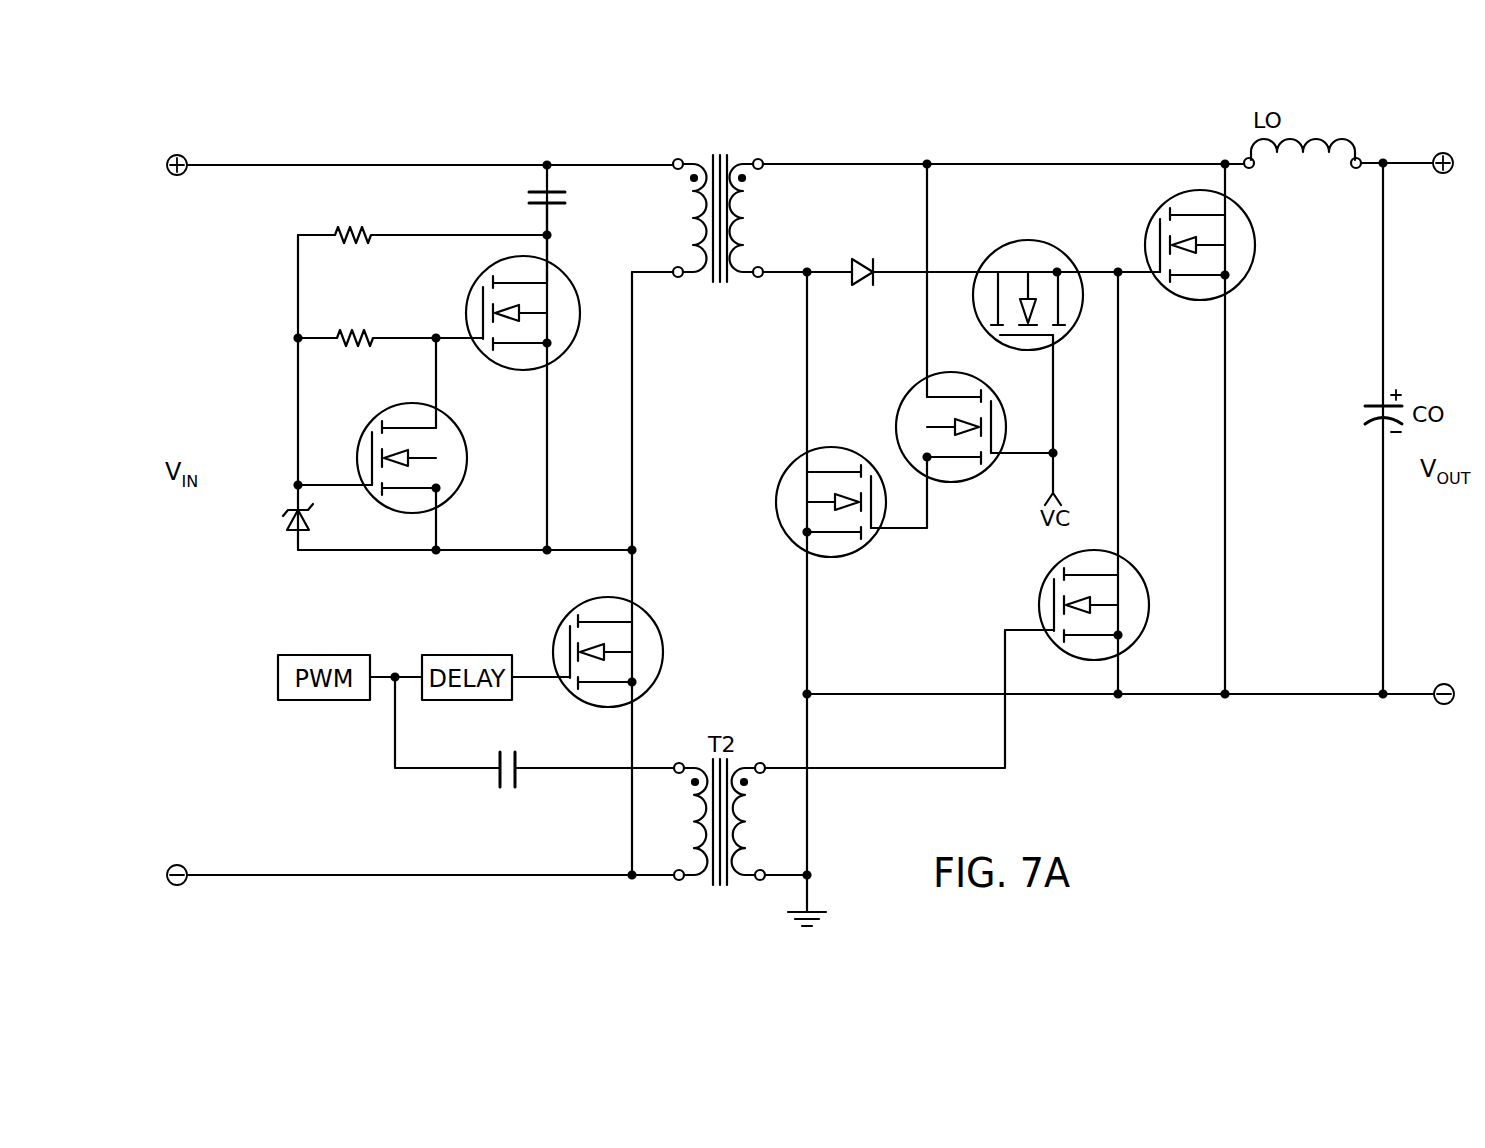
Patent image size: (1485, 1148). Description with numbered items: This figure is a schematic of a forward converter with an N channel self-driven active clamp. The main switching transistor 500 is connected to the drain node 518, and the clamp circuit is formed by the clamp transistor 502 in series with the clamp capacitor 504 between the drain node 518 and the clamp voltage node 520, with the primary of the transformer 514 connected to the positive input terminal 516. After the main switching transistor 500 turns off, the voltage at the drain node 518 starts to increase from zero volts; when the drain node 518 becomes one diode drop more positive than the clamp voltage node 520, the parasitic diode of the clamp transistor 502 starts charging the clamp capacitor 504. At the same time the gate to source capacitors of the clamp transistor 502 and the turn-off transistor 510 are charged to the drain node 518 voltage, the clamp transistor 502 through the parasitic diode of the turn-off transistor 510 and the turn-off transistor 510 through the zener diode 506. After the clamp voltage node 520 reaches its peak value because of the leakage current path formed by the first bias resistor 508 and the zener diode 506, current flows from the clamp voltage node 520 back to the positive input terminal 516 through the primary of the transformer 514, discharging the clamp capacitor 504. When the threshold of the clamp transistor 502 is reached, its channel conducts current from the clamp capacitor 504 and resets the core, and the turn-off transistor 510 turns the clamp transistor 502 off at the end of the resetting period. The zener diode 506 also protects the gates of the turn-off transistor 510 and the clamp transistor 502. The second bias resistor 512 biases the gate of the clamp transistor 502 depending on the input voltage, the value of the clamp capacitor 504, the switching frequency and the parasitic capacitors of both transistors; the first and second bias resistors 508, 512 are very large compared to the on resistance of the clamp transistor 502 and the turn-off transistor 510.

The Q1 500 is at (653, 601).
The Q2 502 is at (574, 352).
The CA 504 is at (526, 191).
The zener diode 506 is at (289, 538).
The R1 508 is at (334, 230).
The Q3 510 is at (404, 400).
The R2 512 is at (336, 335).
The T1 514 is at (682, 221).
The positive Vin terminal 516 is at (318, 160).
The node VD 518 is at (646, 549).
The VC 520 is at (562, 240).